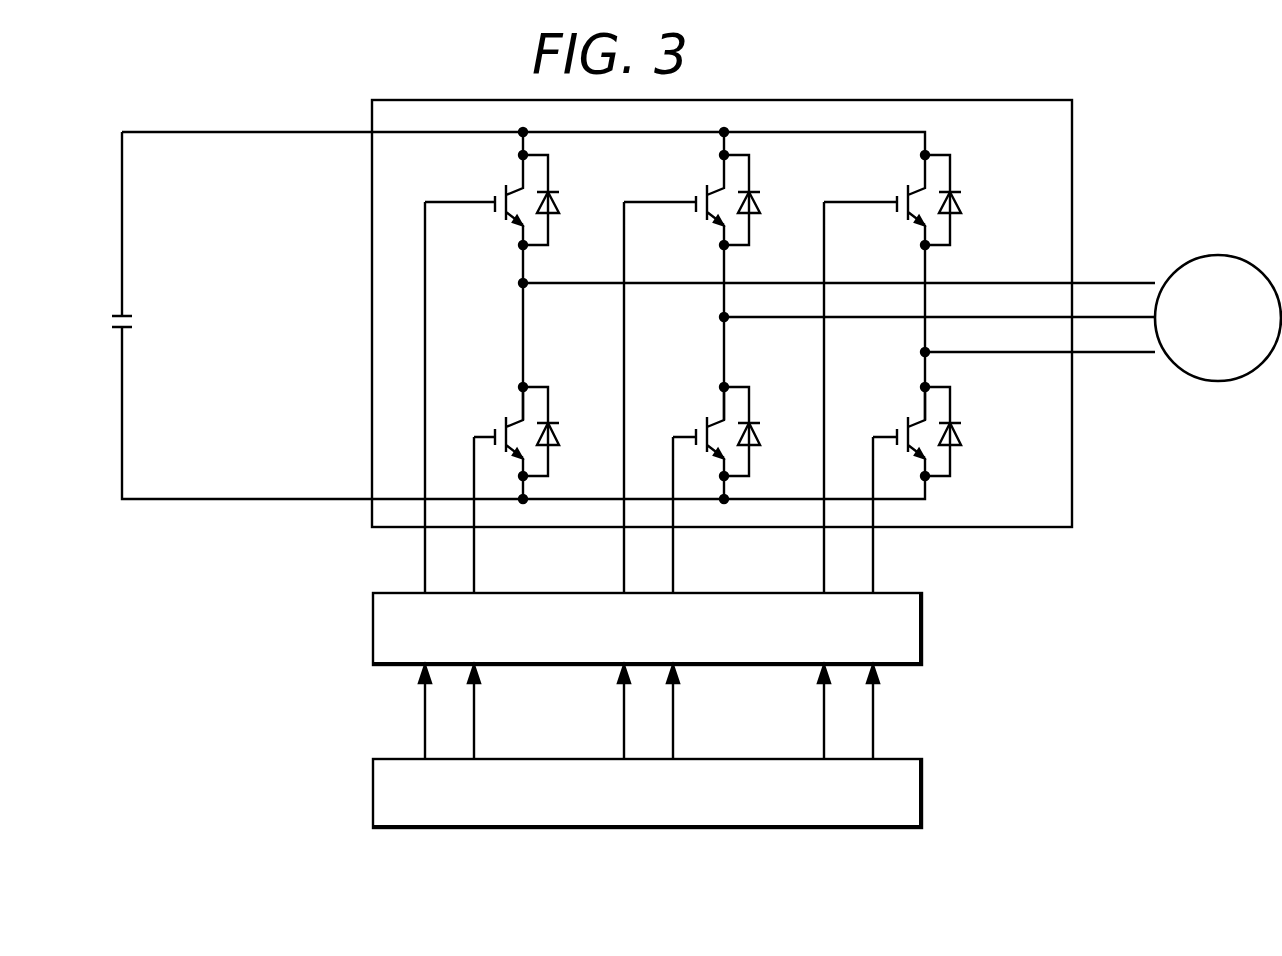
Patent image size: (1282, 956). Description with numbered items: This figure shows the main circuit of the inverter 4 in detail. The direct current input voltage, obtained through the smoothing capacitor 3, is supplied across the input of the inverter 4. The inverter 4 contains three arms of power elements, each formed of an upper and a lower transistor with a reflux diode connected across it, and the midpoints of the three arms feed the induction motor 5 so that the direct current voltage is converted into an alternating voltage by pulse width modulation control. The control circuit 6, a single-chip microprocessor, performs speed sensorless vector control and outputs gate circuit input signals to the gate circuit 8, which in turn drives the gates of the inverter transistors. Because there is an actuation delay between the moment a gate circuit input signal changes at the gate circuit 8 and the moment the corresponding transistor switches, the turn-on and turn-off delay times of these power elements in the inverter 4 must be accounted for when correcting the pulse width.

The smoothing capacitor 3 is at (140, 322).
The inverter 4 is at (1047, 170).
The induction motor 5 is at (1224, 366).
The control circuit 6 is at (922, 788).
The gate circuit 8 is at (922, 610).